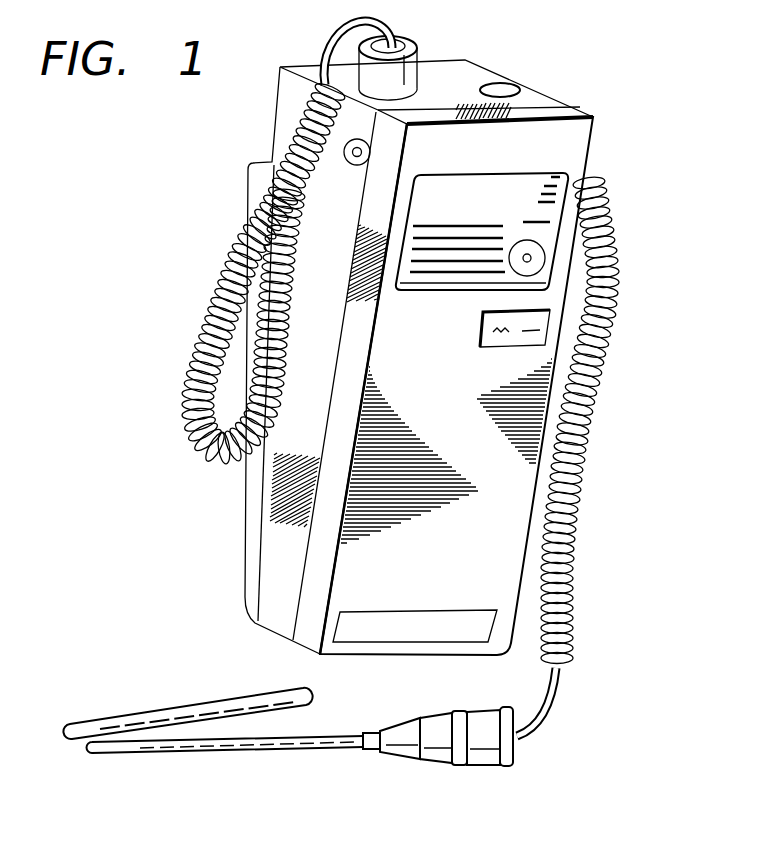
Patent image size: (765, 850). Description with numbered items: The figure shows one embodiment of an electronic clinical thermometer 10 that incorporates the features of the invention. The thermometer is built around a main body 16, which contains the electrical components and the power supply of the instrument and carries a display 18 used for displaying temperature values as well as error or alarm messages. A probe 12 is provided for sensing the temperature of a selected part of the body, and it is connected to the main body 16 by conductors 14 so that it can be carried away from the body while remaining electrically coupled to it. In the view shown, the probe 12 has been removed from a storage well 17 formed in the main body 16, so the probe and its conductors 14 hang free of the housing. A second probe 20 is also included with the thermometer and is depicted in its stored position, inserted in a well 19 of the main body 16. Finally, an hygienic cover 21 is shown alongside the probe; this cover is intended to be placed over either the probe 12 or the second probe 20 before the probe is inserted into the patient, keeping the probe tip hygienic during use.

The electronic thermometer 10 is at (464, 327).
The probe 12 is at (208, 753).
The conductors 14 is at (588, 438).
The main body 16 is at (593, 148).
The storage well 17 is at (507, 83).
The display 18 is at (445, 266).
The well 19 is at (320, 66).
The second probe 20 is at (402, 36).
The hygienic cover 21 is at (112, 712).